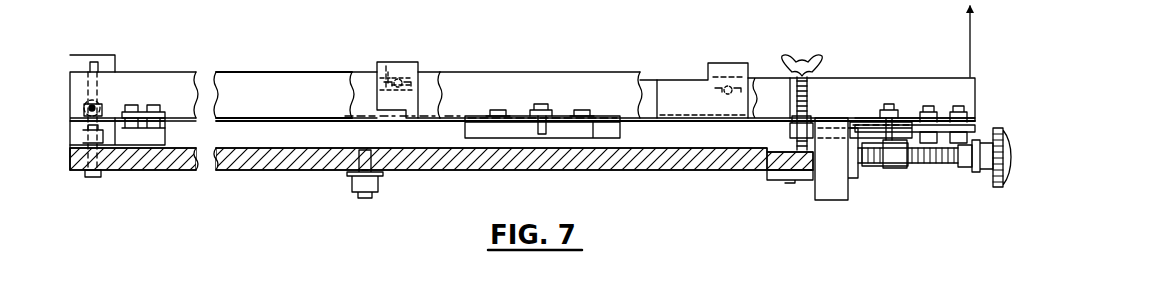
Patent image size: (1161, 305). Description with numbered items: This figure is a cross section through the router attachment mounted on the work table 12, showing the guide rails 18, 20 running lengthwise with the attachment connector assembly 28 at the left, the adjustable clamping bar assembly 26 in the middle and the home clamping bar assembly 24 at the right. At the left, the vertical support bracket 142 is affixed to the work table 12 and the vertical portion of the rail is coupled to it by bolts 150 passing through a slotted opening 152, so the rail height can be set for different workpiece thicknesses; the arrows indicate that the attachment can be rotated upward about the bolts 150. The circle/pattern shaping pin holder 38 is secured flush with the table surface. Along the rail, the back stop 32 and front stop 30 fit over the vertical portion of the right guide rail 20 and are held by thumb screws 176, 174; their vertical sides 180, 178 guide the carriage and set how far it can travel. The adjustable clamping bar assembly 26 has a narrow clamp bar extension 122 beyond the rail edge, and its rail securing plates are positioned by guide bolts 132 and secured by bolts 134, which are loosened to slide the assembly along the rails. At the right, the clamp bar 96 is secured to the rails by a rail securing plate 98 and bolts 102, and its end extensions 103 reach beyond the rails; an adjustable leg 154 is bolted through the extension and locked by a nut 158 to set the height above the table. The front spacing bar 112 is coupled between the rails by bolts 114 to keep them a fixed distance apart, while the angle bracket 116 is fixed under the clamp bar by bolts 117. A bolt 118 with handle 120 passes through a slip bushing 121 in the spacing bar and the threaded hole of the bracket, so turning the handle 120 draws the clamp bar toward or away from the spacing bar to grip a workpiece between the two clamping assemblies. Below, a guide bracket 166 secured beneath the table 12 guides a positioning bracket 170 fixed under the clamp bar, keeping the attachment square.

The work table 12 is at (688, 160).
The left guide rail 18 is at (200, 46).
The right guide rail 20 is at (436, 80).
The home clamping bar assembly 24 is at (900, 60).
The adjustable clamping bar assembly 26 is at (544, 62).
The attachment connector assembly 28 is at (146, 66).
The front stop 30 is at (722, 63).
The back stop 32 is at (404, 62).
The circle/pattern shaping pin holder 38 is at (344, 186).
The clamp bar 96 is at (906, 130).
The rail securing plate 98 is at (858, 122).
The bolts 102 is at (874, 118).
The end extensions 103 is at (790, 130).
The front spacing bar 112 is at (976, 120).
The bolts 114 is at (928, 106).
The angle bracket 116 is at (898, 170).
The bolts 117 is at (886, 166).
The bolt 118 is at (944, 165).
The handle 120 is at (998, 188).
The slip bushing 121 is at (964, 170).
The narrow clamp bar extension 122 is at (612, 130).
The guide bolts 132 is at (502, 108).
The bolts 134 is at (540, 104).
The vertical support bracket 142 is at (76, 55).
The bolts 150 is at (98, 102).
The slotted opening 152 is at (94, 62).
The adjustable leg 154 is at (806, 58).
The nut 158 is at (762, 84).
The guide bracket 166 is at (792, 184).
The positioning bracket 170 is at (842, 196).
The thumb screw 174 is at (712, 87).
The thumb screw 176 is at (388, 68).
The vertical side 178 is at (648, 80).
The vertical side 180 is at (424, 76).